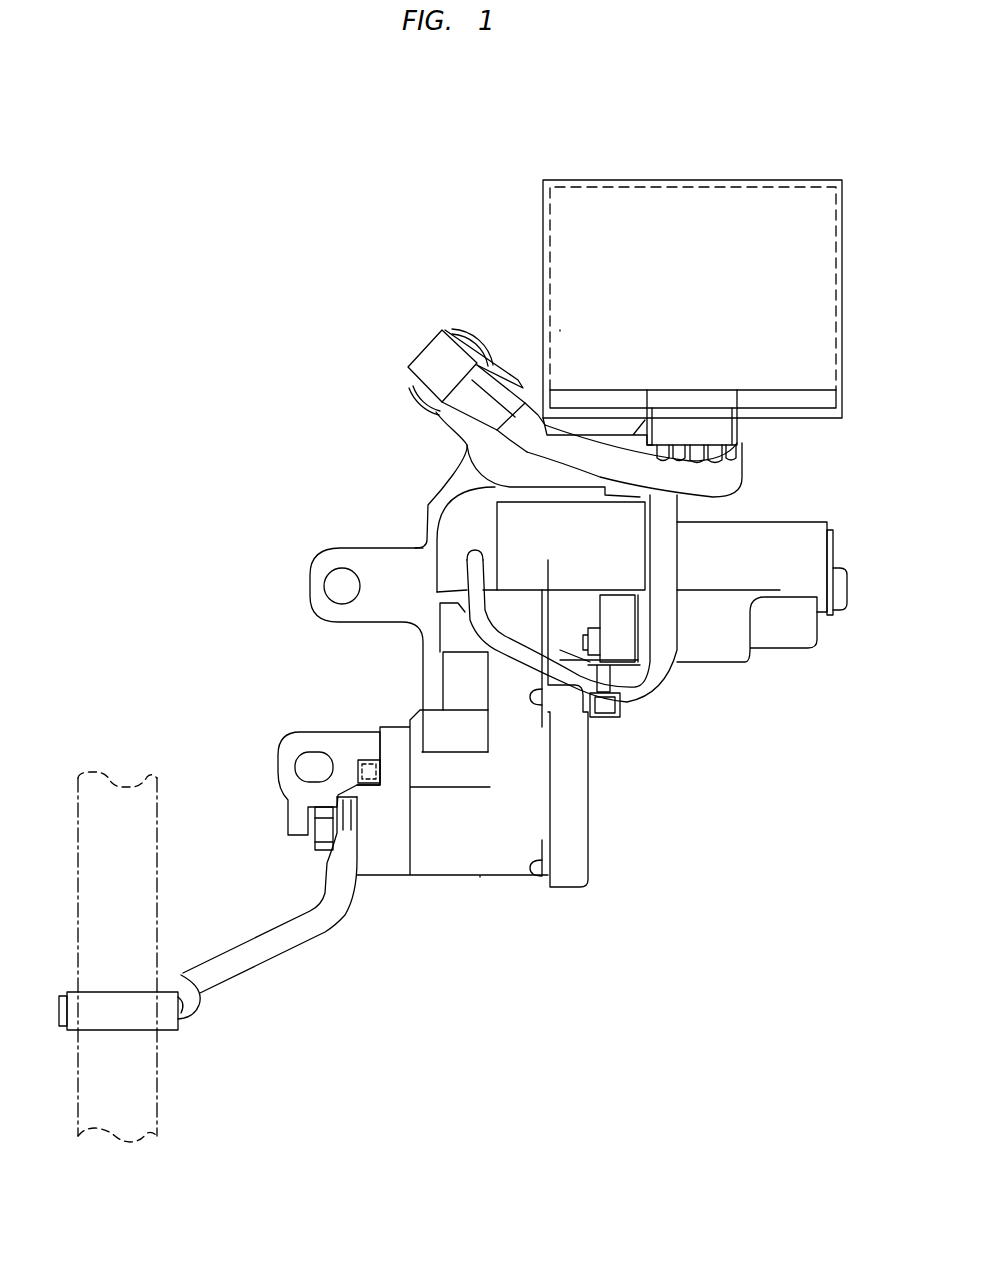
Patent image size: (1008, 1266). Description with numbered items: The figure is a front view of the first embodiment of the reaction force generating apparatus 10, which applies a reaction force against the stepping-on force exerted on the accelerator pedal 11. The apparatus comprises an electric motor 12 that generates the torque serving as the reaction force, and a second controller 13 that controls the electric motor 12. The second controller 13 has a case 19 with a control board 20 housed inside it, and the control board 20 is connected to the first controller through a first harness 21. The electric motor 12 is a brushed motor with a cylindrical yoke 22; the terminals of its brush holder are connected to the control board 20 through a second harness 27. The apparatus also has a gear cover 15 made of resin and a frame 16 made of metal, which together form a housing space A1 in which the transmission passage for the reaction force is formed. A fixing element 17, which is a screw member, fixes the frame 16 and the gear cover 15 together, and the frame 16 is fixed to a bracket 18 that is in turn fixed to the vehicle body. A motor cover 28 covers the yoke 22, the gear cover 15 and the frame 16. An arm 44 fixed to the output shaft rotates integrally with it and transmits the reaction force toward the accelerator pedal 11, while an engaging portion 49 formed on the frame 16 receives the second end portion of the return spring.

The reaction force generating apparatus 10 is at (313, 268).
The accelerator pedal 11 is at (195, 1072).
The electric motor 12 is at (803, 670).
The second controller 13 is at (575, 178).
The gear cover 15 is at (580, 826).
The frame 16 is at (428, 875).
The fixing element 17 is at (528, 697).
The bracket 18 is at (372, 560).
The case 19 is at (683, 178).
The control board 20 is at (753, 200).
The first harness 21 is at (700, 479).
The yoke 22 is at (762, 636).
The second harness 27 is at (655, 660).
The motor cover 28 is at (707, 640).
The arm 44 is at (318, 925).
The engaging portion 49 is at (368, 795).
The housing space A1 is at (480, 880).